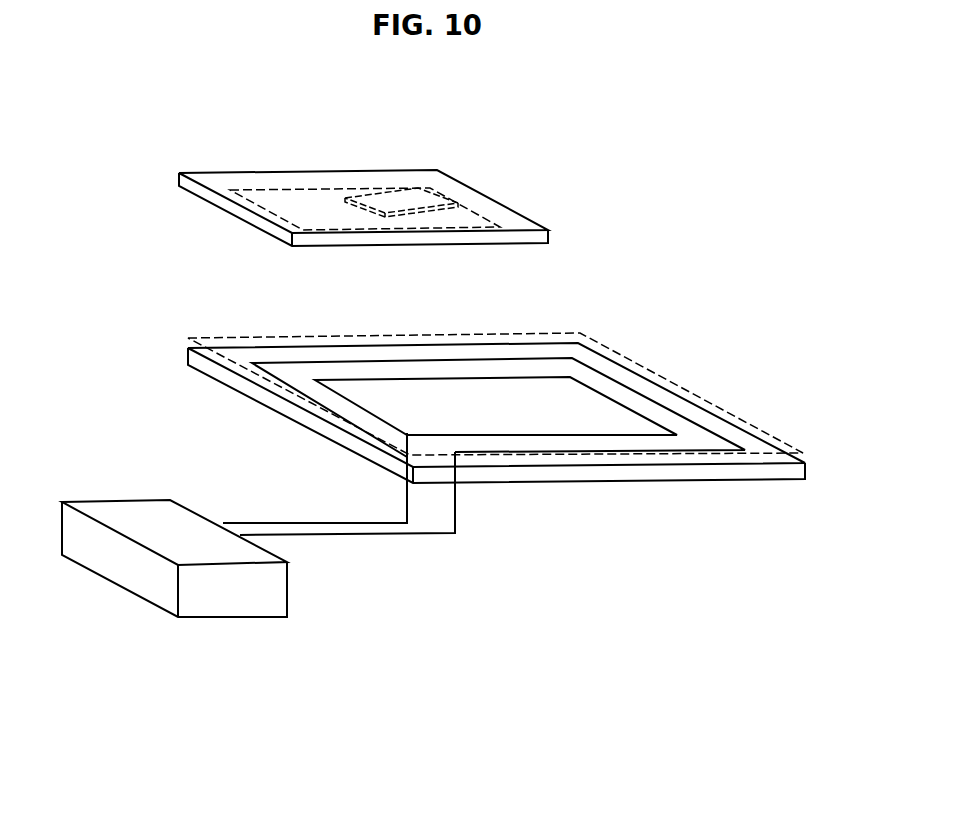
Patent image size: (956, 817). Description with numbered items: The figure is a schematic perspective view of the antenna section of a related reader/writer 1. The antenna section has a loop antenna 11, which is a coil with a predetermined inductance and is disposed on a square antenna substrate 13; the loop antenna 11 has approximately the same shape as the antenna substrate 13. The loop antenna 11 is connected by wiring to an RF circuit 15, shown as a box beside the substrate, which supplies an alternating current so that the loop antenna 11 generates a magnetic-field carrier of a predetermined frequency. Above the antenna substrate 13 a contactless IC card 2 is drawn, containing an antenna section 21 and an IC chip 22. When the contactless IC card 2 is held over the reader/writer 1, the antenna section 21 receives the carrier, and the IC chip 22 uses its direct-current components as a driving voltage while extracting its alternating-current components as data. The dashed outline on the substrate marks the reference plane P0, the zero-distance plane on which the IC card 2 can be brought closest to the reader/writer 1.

The reader/writer 1 is at (433, 474).
The contactless IC card 2 is at (228, 172).
The antenna section 21 is at (305, 190).
The IC chip 22 is at (377, 198).
The reference plane P0 is at (520, 333).
The loop antenna 11 is at (680, 450).
The antenna substrate 13 is at (613, 482).
The RF circuit 15 is at (235, 620).